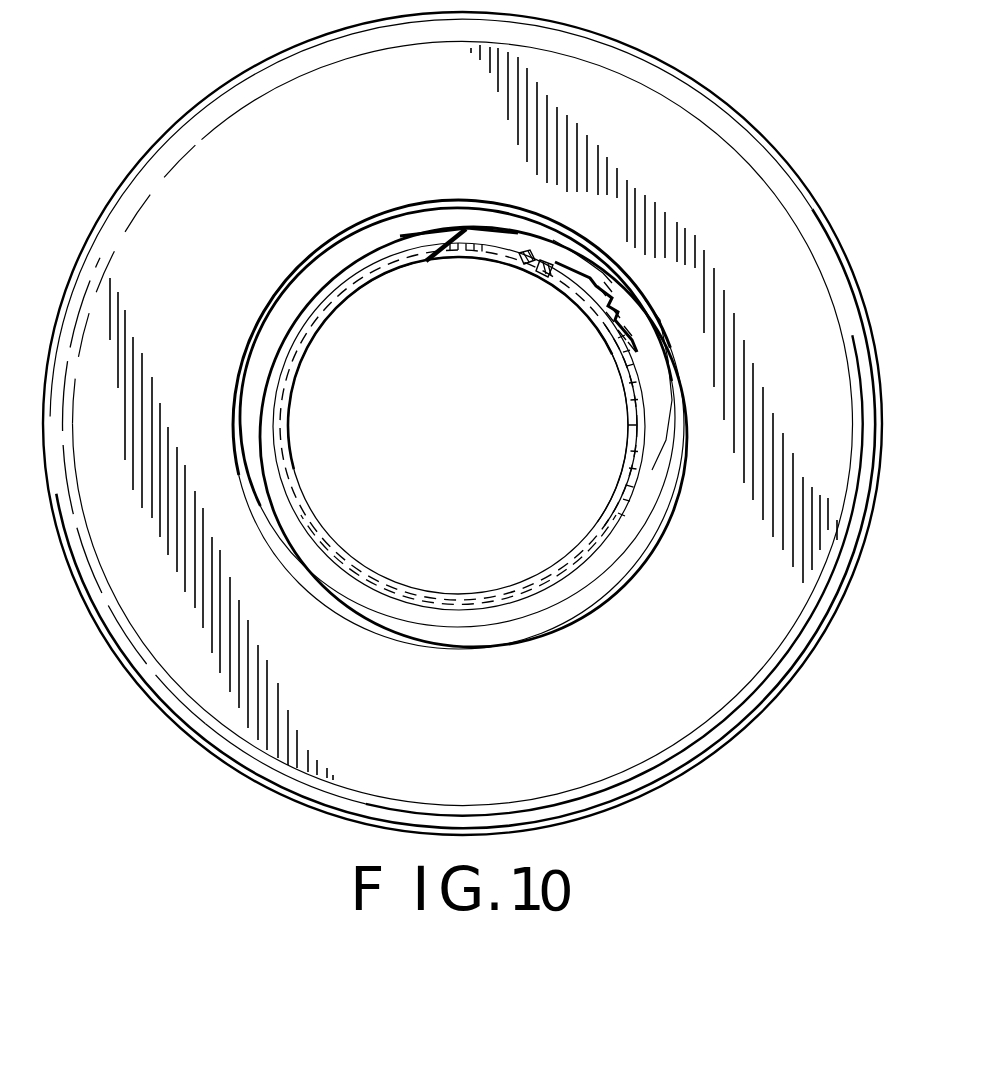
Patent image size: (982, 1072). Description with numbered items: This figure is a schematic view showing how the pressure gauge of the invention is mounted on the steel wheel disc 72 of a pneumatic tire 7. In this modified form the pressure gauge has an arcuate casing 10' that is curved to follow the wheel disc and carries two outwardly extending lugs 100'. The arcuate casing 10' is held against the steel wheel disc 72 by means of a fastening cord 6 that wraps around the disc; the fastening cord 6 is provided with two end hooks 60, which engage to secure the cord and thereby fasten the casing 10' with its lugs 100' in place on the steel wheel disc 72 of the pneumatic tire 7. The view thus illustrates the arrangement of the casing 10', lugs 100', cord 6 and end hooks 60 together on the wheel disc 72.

The pneumatic tire 7 is at (838, 288).
The end hooks 60 is at (548, 258).
The steel wheel disc 72 is at (505, 260).
The outwardly extending lugs 100' is at (573, 239).
The arcuate casing 10' is at (625, 296).
The fastening cord 6 is at (638, 403).